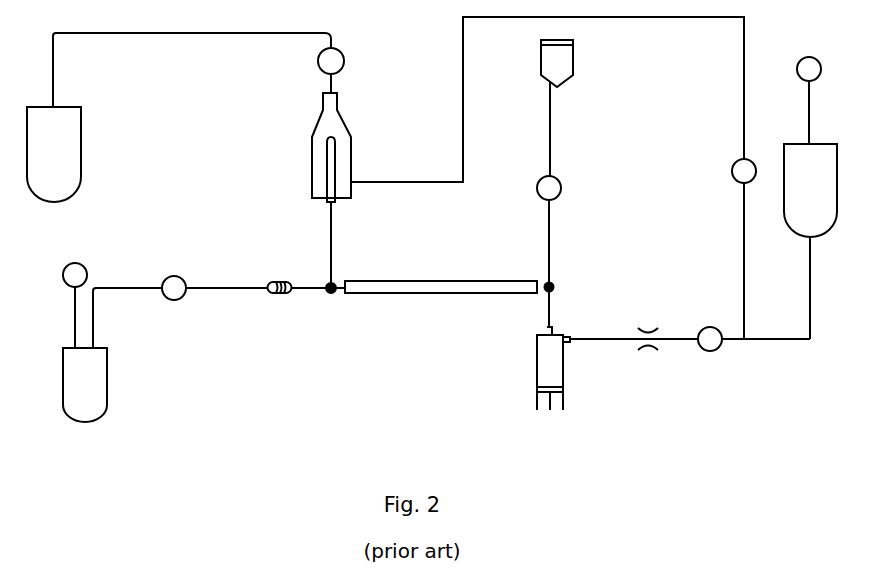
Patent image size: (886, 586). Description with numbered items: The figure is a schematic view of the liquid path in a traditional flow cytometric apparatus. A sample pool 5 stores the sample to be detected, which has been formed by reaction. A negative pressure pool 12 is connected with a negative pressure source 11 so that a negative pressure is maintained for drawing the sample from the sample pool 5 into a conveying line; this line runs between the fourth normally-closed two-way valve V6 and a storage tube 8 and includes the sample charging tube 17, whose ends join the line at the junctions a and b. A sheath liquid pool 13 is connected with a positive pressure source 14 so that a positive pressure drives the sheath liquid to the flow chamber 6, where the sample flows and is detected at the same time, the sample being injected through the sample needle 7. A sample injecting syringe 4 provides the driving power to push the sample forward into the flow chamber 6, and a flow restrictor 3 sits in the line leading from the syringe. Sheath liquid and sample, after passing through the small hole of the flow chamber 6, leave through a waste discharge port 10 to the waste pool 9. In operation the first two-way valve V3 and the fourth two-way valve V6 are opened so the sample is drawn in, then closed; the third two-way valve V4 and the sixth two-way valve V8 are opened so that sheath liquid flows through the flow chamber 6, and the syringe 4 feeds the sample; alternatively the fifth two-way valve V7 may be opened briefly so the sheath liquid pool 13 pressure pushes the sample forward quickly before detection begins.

The flow restrictor 3 is at (650, 349).
The sample injecting syringe 4 is at (553, 368).
The sample pool 5 is at (557, 108).
The flow chamber 6 is at (332, 107).
The sample needle 7 is at (327, 150).
The storage tube 8 is at (275, 280).
The waste pool 9 is at (179, 117).
The outlet pipe 10 is at (354, 182).
The negative pressure source 11 is at (78, 262).
The negative pressure pool 12 is at (85, 385).
The sheath liquid pool 13 is at (810, 210).
The positive pressure source 14 is at (812, 56).
The sample charging tube 17 is at (413, 280).
The junction a is at (333, 281).
The junction b is at (552, 283).
The first normally-closed two-way valve V3 is at (180, 312).
The third normally-closed two-way valve V4 is at (317, 70).
The fourth normally-closed two-way valve V6 is at (537, 188).
The fifth normally-closed two-way valve V7 is at (712, 351).
The sixth normally-closed two-way valve V8 is at (729, 249).